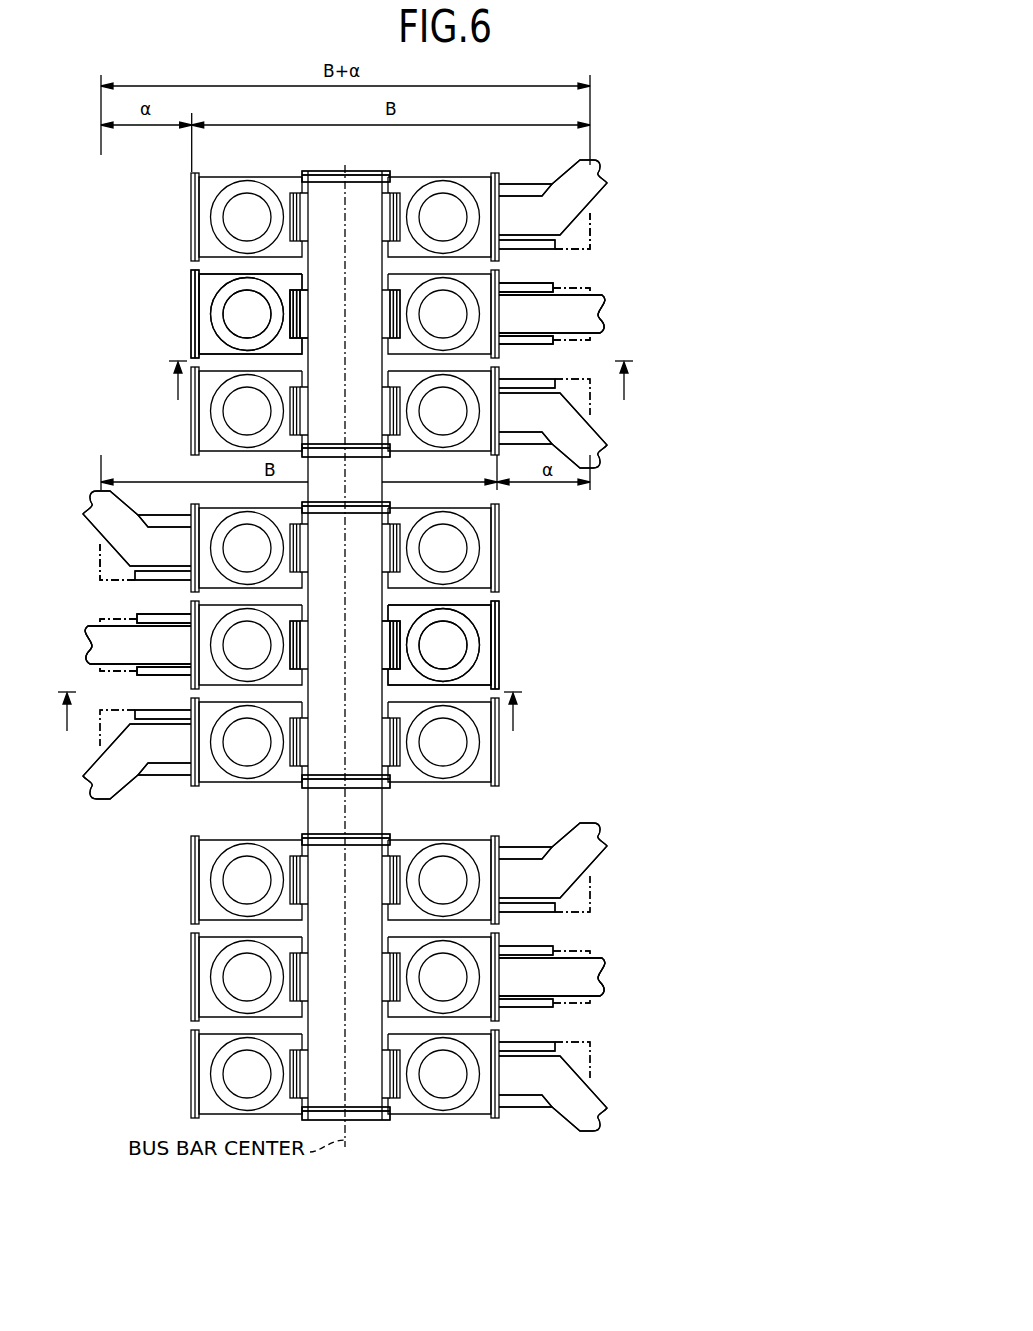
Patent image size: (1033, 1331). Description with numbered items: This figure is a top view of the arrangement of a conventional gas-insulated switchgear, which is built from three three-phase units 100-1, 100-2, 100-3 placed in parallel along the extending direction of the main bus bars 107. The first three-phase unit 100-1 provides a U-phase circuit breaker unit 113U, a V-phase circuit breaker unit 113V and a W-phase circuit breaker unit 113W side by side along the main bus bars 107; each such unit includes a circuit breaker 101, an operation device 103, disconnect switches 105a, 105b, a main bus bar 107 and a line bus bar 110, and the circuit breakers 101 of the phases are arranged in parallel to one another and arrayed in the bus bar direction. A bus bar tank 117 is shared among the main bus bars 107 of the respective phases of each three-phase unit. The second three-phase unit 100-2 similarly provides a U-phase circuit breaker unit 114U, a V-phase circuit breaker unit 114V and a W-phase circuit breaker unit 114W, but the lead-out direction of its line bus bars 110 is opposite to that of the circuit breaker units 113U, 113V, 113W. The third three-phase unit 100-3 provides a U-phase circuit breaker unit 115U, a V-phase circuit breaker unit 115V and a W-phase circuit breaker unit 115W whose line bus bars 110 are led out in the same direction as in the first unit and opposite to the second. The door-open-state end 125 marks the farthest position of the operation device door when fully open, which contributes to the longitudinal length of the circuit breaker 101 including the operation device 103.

The three-phase unit 100-1 is at (713, 165).
The three-phase unit 100-2 is at (713, 500).
The three-phase unit 100-3 is at (713, 832).
The circuit breaker 101 is at (212, 287).
The operation device 103 is at (521, 289).
The disconnect switch 105a is at (218, 314).
The disconnect switch 105b is at (473, 340).
The main bus bar 107 is at (364, 195).
The line bus bar 110 is at (600, 296).
The U-phase circuit breaker unit 113U is at (603, 204).
The V-phase circuit breaker unit 113V is at (602, 313).
The W-phase circuit breaker unit 113W is at (605, 423).
The U-phase circuit breaker unit 114U is at (395, 535).
The V-phase circuit breaker unit 114V is at (395, 644).
The W-phase circuit breaker unit 114W is at (397, 754).
The U-phase circuit breaker unit 115U is at (603, 867).
The V-phase circuit breaker unit 115V is at (602, 976).
The W-phase circuit breaker unit 115W is at (605, 1086).
The bus bar tank 117 is at (363, 430).
The door-open-state end 125 is at (592, 217).